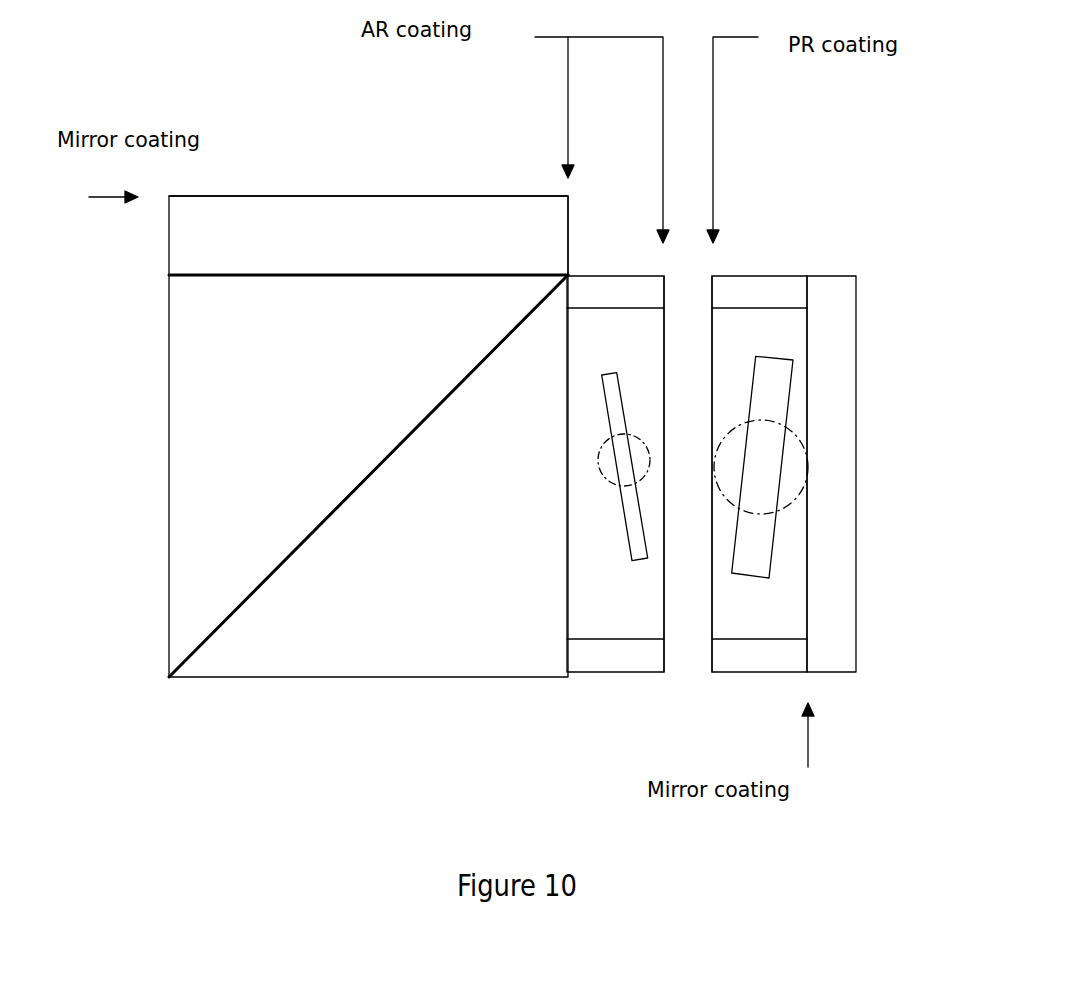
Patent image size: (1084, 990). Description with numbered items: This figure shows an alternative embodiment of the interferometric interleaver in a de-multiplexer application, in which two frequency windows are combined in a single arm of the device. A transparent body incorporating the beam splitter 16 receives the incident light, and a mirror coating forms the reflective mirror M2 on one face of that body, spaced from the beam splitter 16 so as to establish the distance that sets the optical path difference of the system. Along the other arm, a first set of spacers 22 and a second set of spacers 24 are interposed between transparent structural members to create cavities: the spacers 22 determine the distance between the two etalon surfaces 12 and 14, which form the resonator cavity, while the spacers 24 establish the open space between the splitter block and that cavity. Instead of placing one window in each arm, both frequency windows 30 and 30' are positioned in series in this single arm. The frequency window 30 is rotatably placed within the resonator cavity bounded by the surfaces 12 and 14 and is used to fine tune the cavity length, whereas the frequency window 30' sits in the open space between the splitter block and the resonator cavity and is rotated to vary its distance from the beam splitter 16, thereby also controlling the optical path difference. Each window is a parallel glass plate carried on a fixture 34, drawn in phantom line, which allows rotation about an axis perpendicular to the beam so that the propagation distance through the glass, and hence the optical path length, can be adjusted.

The etalon surface 12 is at (712, 357).
The reflective mirror 14 is at (807, 323).
The beam splitter 16 is at (222, 627).
The first set of spacers 22 is at (762, 276).
The second set of spacers 24 is at (592, 271).
The frequency window 30 is at (760, 491).
The frequency window 30' is at (616, 500).
The fixture 34 is at (648, 435).
The mirror M2 is at (266, 198).